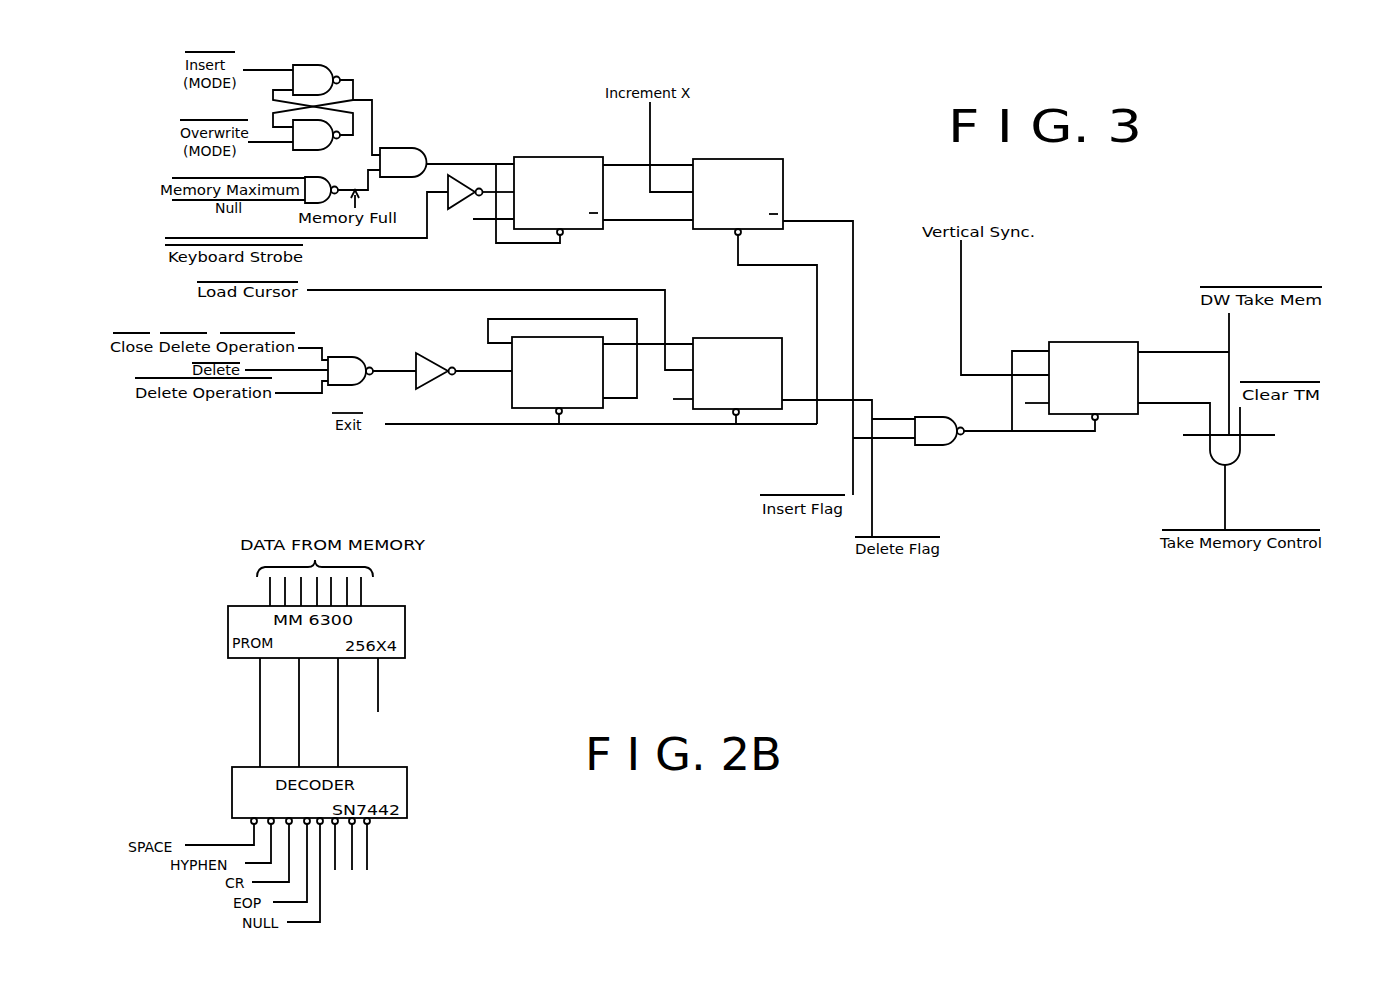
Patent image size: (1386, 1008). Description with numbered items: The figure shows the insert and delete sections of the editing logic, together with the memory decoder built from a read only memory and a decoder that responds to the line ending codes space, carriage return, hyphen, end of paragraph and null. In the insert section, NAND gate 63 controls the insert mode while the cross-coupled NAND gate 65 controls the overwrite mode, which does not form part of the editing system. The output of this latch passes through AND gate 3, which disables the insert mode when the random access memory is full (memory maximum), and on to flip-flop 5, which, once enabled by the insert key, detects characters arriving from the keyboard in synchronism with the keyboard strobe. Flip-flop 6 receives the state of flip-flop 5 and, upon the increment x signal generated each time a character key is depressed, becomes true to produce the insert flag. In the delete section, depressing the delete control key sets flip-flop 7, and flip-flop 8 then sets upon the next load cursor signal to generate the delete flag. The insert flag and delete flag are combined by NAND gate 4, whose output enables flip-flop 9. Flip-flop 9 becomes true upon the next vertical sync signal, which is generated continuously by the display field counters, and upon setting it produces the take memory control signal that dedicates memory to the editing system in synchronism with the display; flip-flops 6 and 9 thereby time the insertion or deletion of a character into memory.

The NAND gate 63 is at (317, 76).
The NAND gate 65 is at (322, 137).
The AND gate 3 is at (407, 158).
The flip-flop 5 is at (563, 162).
The flip-flop 6 is at (745, 167).
The flip-flop 7 is at (533, 388).
The flip-flop 8 is at (712, 390).
The NAND gate 4 is at (933, 427).
The flip-flop 9 is at (1118, 398).